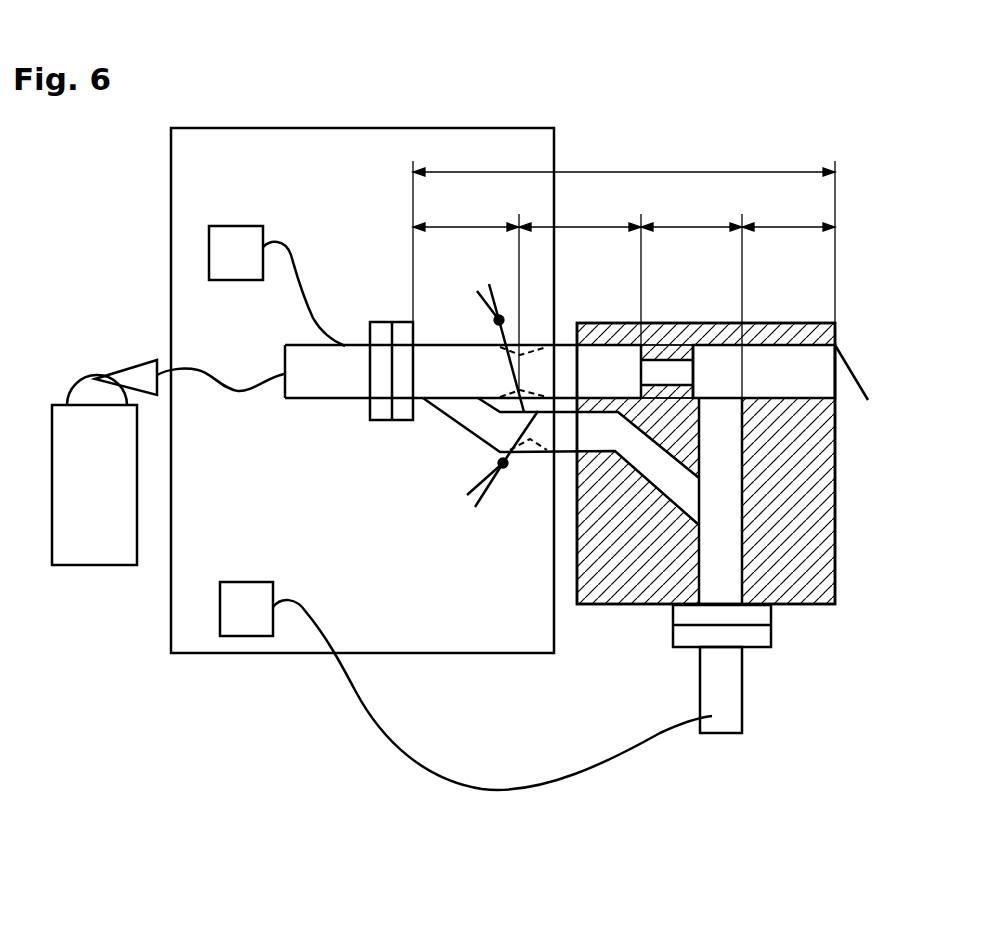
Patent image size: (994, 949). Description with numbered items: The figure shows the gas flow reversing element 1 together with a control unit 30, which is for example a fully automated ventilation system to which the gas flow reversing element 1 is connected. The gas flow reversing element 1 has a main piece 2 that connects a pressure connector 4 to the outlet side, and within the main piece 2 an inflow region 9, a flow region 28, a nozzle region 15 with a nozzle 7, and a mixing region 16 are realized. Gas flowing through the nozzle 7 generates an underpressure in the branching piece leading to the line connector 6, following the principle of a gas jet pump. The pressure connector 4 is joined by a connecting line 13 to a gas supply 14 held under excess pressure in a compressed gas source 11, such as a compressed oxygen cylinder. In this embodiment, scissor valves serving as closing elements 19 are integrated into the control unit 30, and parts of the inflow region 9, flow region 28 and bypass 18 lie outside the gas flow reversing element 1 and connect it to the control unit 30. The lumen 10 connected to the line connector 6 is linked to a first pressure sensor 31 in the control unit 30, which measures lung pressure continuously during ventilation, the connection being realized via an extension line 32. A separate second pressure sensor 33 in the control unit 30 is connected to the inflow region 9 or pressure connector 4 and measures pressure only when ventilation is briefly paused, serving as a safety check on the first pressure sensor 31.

The gas flow reversing element 1 is at (706, 515).
The main piece 2 is at (624, 228).
The pressure connector 4 is at (387, 313).
The line connector 6 is at (766, 694).
The nozzle 7 is at (679, 431).
The inflow region 9 is at (455, 351).
The lumen 10 is at (767, 750).
The compressed gas source 11 is at (101, 526).
The connecting line 13 is at (199, 309).
The gas supply 14 is at (87, 361).
The nozzle region 15 is at (691, 293).
The mixing region 16 is at (814, 280).
The bypass 18 is at (526, 591).
The closing element 19 is at (428, 410).
The flow region 28 is at (580, 293).
The control unit 30 is at (362, 449).
The first pressure sensor 31 is at (260, 670).
The extension line 32 is at (492, 729).
The second pressure sensor 33 is at (275, 246).